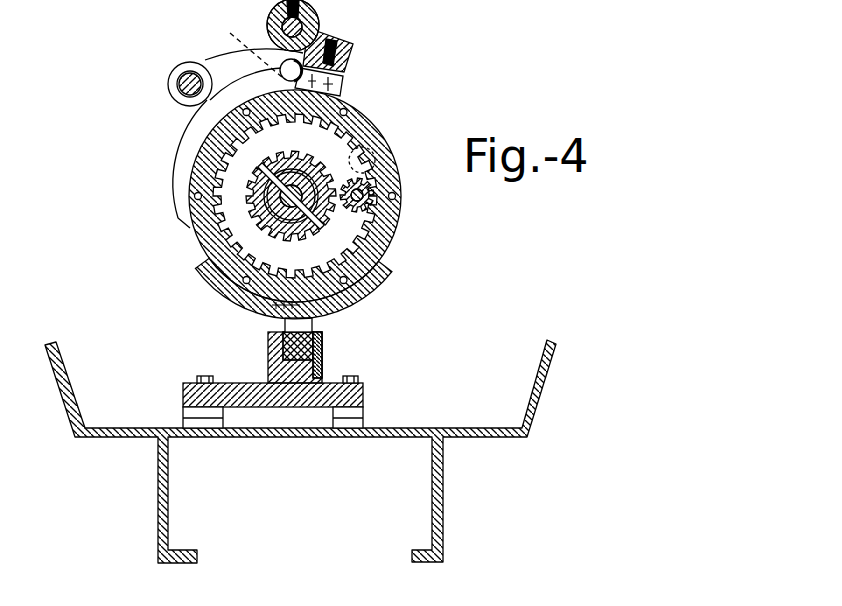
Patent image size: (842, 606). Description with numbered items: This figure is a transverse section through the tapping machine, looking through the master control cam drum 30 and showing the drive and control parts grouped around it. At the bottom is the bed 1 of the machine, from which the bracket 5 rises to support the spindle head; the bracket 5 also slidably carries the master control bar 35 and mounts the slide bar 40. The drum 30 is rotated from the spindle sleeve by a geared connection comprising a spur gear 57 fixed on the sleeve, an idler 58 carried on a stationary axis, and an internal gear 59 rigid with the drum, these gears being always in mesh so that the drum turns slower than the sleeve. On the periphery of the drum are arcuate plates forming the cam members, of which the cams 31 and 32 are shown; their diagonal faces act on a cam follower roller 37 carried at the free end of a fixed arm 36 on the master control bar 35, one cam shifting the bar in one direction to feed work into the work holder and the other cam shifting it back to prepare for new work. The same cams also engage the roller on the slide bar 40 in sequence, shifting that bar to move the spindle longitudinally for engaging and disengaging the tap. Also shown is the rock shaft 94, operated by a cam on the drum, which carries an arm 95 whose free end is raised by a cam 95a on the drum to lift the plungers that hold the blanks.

The bed 1 is at (432, 474).
The bracket 5 is at (352, 396).
The slide bar 40 is at (268, 351).
The master control cam drum 30 is at (398, 224).
The cam member 31 is at (230, 289).
The spur gear 57 is at (265, 170).
The idler 58 is at (358, 181).
The internal gear 59 is at (352, 152).
The cam member 32 is at (211, 109).
The rock shaft 94 is at (183, 78).
The arm 95 is at (214, 66).
The cam 95a is at (237, 45).
The fixed arm 36 is at (268, 42).
The master control bar 35 is at (318, 22).
The cam follower roller 37 is at (346, 84).